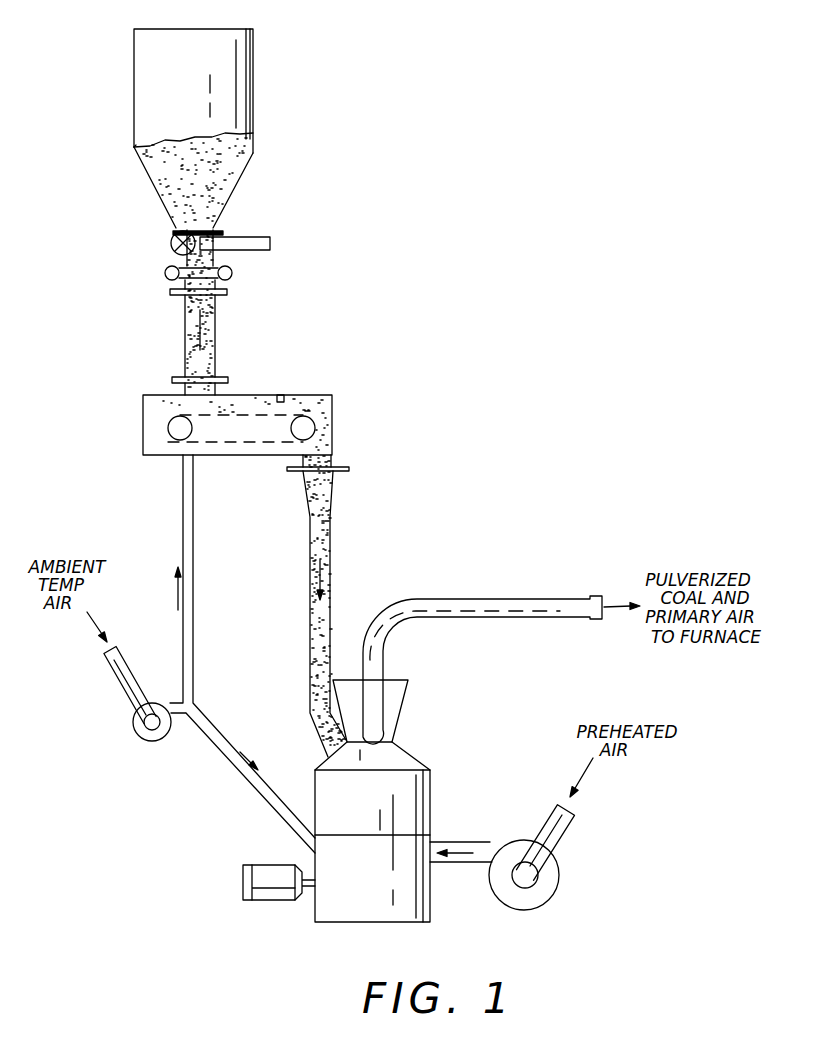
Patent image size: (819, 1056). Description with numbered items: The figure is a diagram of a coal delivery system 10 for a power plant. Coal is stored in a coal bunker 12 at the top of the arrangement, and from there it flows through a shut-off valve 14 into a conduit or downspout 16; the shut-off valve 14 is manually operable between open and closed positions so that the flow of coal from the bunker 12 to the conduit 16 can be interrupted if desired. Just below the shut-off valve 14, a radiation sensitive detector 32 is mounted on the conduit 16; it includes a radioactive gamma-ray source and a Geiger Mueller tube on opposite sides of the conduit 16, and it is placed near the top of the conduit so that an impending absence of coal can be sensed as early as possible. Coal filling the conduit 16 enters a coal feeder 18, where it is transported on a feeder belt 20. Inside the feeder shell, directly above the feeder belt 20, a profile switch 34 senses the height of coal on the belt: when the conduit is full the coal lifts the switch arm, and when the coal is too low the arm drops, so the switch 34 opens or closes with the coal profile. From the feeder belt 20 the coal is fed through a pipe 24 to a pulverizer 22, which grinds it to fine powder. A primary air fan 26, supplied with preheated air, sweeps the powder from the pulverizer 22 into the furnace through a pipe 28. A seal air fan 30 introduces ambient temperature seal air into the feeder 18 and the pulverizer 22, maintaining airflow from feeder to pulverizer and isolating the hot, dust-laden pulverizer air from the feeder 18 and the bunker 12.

The coal delivery system 10 is at (98, 390).
The coal bunker 12 is at (240, 100).
The shut-off valve 14 is at (172, 243).
The radiation sensitive detector 32 is at (165, 272).
The conduit 16 is at (185, 318).
The coal feeder 18 is at (143, 437).
The feeder belt 20 is at (222, 447).
The profile switch 34 is at (282, 395).
The pipe 24 is at (331, 562).
The pulverizer 22 is at (418, 793).
The pipe 28 is at (488, 598).
The primary air fan 26 is at (518, 842).
The seal air fan 30 is at (158, 741).